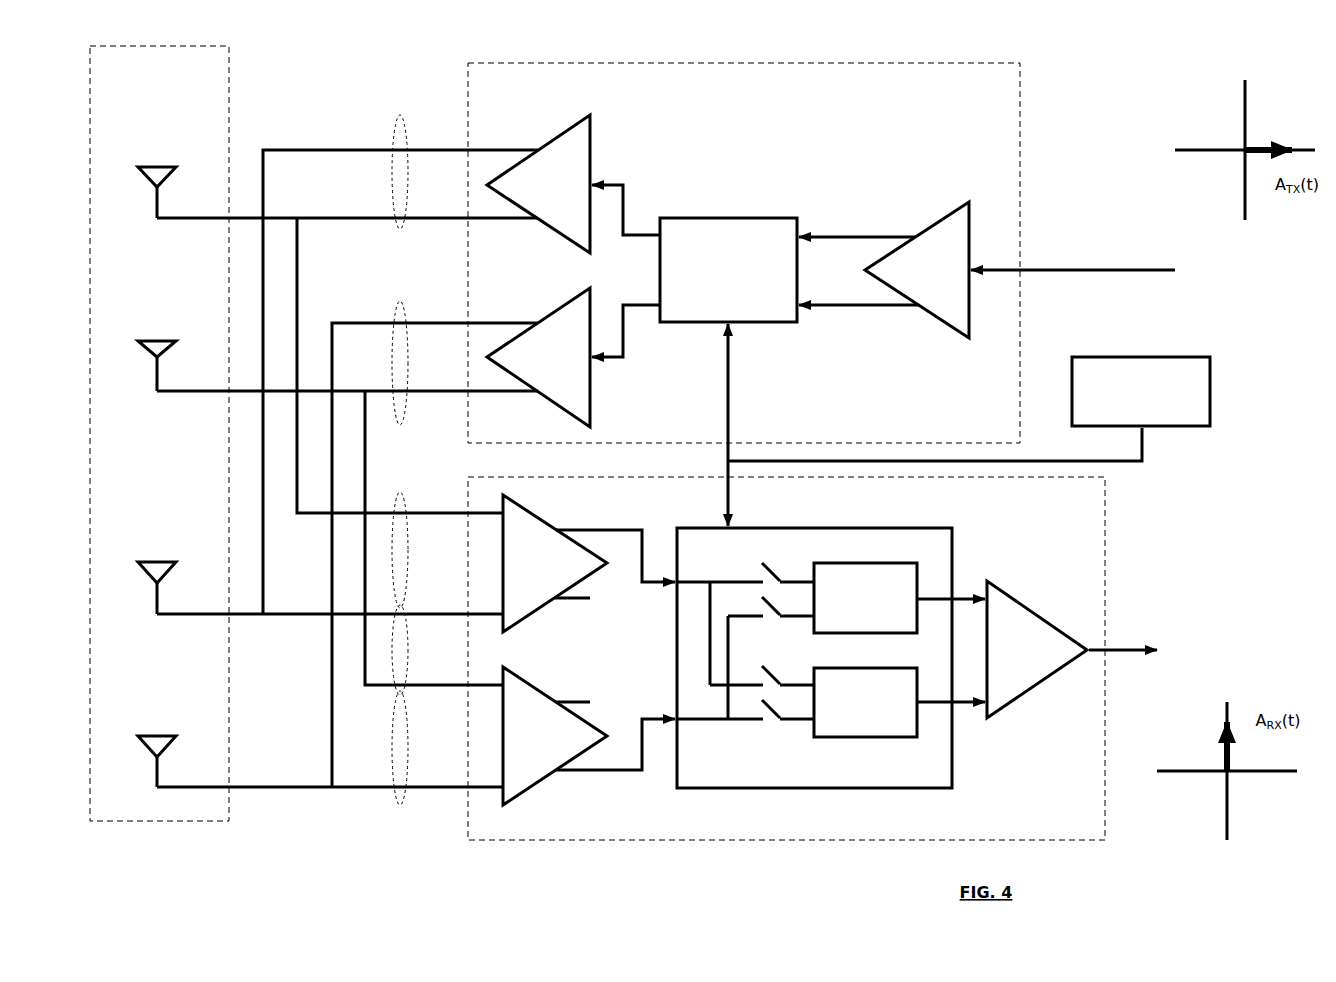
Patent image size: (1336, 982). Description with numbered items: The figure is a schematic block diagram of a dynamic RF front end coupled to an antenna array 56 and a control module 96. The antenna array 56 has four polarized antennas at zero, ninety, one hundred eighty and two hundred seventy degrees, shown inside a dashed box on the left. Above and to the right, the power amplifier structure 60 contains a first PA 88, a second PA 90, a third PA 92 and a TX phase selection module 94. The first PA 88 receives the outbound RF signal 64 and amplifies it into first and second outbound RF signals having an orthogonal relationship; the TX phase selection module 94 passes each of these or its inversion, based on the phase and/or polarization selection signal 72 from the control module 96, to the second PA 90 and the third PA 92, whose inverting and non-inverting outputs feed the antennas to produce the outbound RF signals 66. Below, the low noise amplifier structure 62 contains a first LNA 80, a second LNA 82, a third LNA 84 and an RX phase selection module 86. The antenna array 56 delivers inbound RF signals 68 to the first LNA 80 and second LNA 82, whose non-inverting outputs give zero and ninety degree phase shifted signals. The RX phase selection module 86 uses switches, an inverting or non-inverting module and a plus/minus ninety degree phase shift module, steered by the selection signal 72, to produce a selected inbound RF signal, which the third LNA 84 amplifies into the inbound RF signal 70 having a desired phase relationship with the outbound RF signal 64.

The antenna array 56 is at (159, 433).
The power amplifier structure 60 is at (744, 253).
The low noise amplifier structure 62 is at (786, 658).
The outbound RF signal 64 is at (1133, 273).
The outbound RF signals 66 is at (400, 115).
The inbound RF signals 68 is at (400, 805).
The inbound RF signal 70 is at (1180, 650).
The phase and/or polarization selection signal 72 is at (1206, 515).
The first LNA 80 is at (589, 563).
The second LNA 82 is at (589, 736).
The third LNA 84 is at (1037, 649).
The RX phase selection module 86 is at (831, 658).
The first PA 88 is at (884, 270).
The second PA 90 is at (579, 184).
The third PA 92 is at (582, 357).
The TX phase selection module 94 is at (728, 270).
The control module 96 is at (1141, 391).